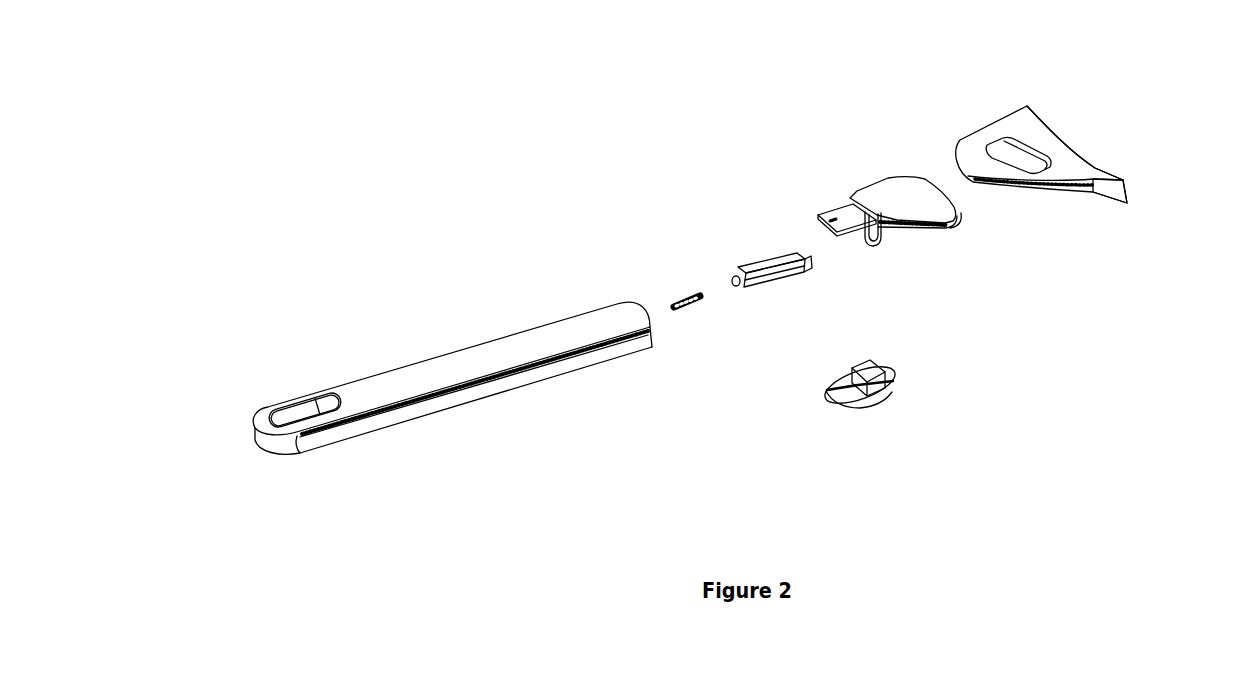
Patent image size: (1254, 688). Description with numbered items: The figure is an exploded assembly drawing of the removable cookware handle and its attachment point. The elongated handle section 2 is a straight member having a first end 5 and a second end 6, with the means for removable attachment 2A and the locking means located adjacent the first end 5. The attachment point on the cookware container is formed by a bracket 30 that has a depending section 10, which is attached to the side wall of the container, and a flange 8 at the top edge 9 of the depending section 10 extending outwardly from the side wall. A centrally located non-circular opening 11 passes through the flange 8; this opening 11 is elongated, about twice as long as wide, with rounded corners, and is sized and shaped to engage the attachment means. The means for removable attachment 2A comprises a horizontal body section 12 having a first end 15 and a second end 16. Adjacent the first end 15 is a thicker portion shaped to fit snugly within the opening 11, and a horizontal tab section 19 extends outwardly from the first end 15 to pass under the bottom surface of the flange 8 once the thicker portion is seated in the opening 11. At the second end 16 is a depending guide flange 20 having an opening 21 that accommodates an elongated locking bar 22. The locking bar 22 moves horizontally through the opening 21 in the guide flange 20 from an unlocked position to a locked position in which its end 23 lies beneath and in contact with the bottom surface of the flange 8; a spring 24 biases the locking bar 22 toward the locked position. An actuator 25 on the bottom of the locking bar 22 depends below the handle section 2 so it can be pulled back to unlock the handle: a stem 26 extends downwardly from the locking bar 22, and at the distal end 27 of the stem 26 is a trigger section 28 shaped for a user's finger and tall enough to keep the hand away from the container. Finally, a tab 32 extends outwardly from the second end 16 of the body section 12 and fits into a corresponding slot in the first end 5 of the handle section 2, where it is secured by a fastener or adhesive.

The elongated handle section 2 is at (496, 401).
The first end 5 is at (640, 345).
The second end 6 is at (327, 437).
The flange 8 is at (988, 168).
The top edge 9 is at (1040, 117).
The depending section 10 is at (1120, 187).
The non-circular opening 11 is at (1017, 158).
The horizontal body section 12 is at (967, 219).
The first end 15 is at (913, 183).
The second end 16 is at (810, 146).
The horizontal tab section 19 is at (960, 217).
The depending guide flange 20 is at (877, 238).
The opening 21 is at (867, 240).
The elongated locking bar 22 is at (721, 226).
The end 23 is at (780, 263).
The spring 24 is at (683, 297).
The actuator 25 is at (897, 399).
The stem 26 is at (870, 377).
The distal end 27 is at (892, 385).
The trigger section 28 is at (880, 400).
The bracket 30 is at (1043, 119).
The tab 32 is at (847, 212).
The means for removable attachment 2A is at (973, 210).